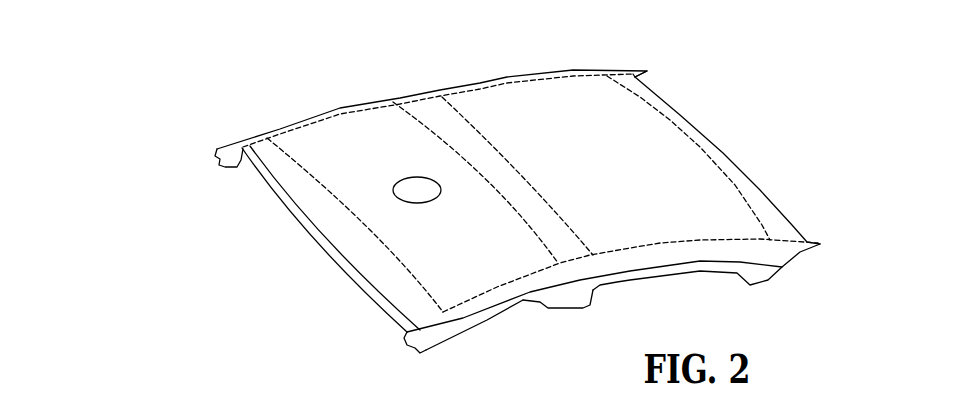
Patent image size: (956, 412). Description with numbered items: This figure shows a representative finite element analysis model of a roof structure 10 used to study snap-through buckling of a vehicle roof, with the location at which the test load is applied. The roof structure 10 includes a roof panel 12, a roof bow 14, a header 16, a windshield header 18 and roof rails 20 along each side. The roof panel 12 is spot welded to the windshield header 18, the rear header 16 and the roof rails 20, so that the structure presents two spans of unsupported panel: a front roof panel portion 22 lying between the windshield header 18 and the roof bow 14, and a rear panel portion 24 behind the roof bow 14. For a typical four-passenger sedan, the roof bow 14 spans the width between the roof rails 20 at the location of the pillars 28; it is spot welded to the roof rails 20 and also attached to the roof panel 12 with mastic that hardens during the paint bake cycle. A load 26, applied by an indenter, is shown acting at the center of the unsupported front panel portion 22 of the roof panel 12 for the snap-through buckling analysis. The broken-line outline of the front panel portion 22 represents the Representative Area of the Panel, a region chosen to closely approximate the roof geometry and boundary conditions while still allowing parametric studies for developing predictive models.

The roof structure 10 is at (690, 78).
The roof panel 12 is at (571, 78).
The roof bow 14 is at (440, 110).
The header 16 is at (740, 177).
The windshield header 18 is at (303, 200).
The roof rails 20 is at (229, 156).
The front roof panel portion 22 is at (337, 128).
The rear panel portion 24 is at (627, 110).
The load 26 is at (418, 172).
The pillars 28 is at (575, 295).